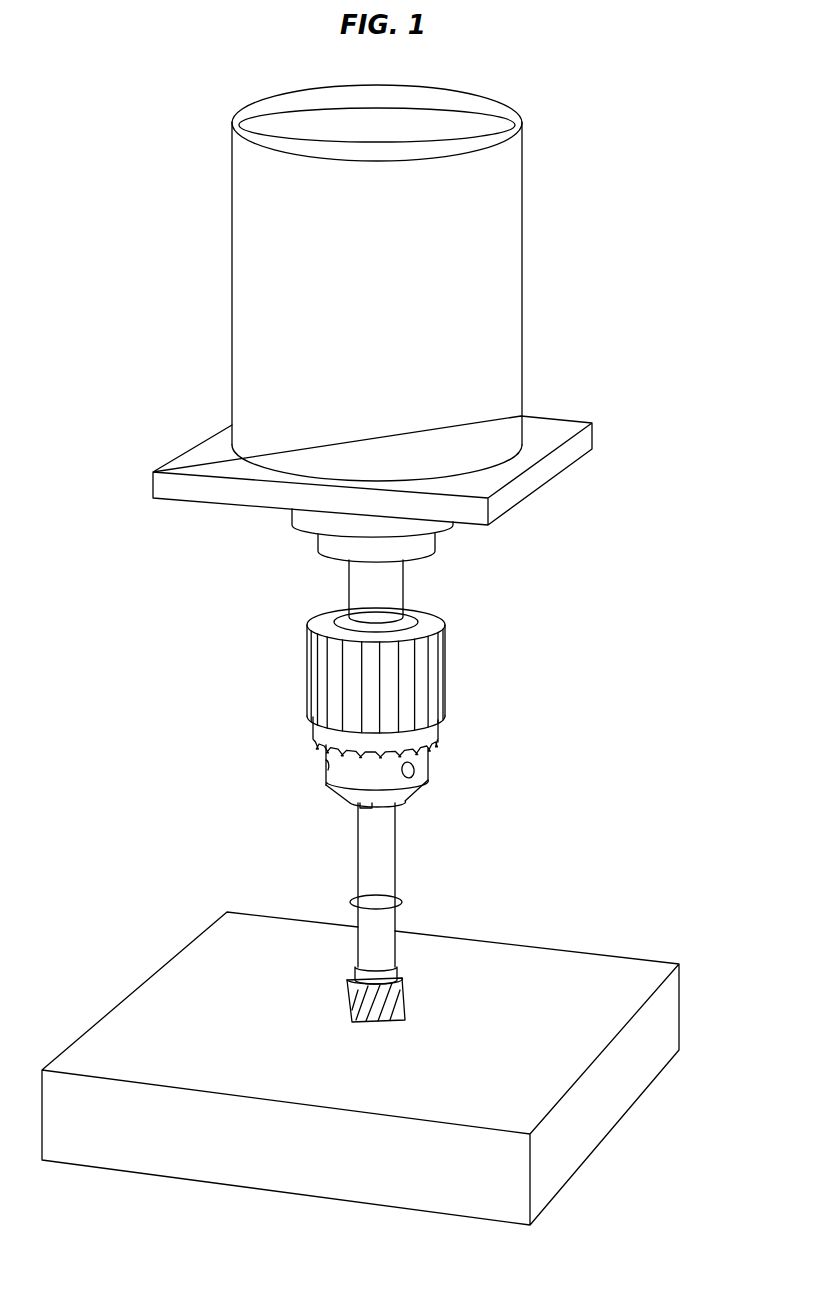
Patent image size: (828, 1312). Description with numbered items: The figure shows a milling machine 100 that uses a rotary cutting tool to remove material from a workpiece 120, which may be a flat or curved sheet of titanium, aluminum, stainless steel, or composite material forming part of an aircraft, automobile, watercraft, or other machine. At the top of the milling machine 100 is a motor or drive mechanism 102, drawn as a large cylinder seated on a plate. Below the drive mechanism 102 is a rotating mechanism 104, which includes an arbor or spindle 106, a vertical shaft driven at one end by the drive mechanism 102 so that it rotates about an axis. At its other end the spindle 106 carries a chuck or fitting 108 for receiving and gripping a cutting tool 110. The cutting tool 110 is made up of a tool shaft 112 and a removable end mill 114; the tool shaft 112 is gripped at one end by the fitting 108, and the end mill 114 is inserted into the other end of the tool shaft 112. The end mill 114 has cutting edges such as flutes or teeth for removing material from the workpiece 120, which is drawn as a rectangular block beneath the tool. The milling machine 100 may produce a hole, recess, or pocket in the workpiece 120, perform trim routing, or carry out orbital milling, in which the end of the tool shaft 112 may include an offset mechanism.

The milling machine 100 is at (655, 197).
The drive mechanism 102 is at (185, 330).
The rotating mechanism 104 is at (176, 1023).
The spindle 106 is at (473, 550).
The fitting 108 is at (419, 773).
The cutting tool 110 is at (590, 845).
The tool shaft 112 is at (373, 862).
The end mill 114 is at (399, 998).
The workpiece 120 is at (623, 975).